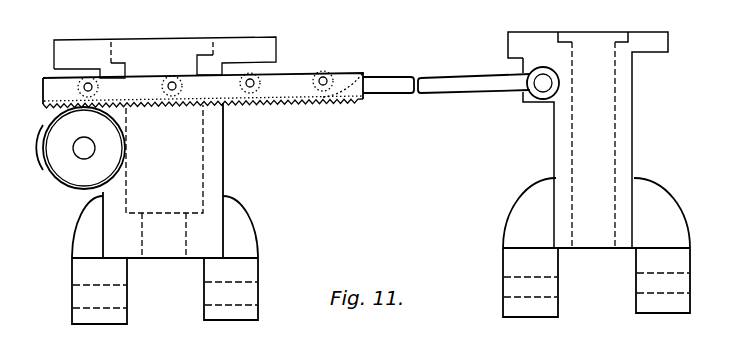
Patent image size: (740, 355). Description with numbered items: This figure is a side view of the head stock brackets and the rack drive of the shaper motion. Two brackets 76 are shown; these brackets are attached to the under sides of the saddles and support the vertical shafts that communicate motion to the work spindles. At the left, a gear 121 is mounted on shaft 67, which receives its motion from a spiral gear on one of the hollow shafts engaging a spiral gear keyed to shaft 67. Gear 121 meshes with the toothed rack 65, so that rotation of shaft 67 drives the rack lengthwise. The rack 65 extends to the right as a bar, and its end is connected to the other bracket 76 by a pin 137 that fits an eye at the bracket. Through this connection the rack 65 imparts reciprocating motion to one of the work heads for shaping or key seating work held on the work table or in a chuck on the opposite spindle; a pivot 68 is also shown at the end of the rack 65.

The rack 65 is at (280, 108).
The shaft 67 is at (74, 146).
The pivot pin 68 is at (334, 77).
The bracket 76 is at (222, 153).
The gear 121 is at (44, 149).
The pin 137 is at (533, 93).